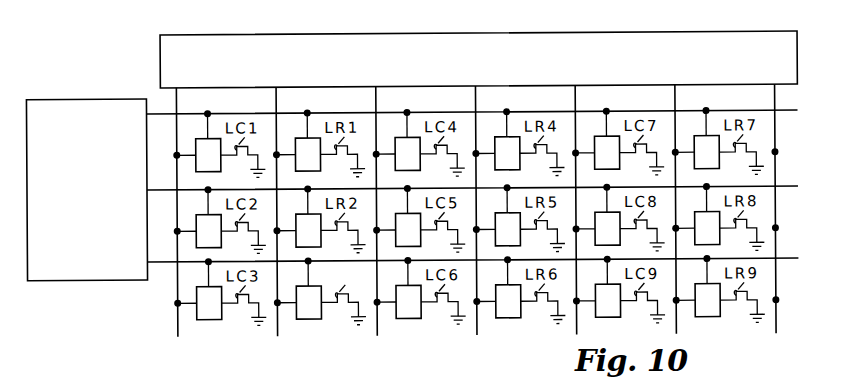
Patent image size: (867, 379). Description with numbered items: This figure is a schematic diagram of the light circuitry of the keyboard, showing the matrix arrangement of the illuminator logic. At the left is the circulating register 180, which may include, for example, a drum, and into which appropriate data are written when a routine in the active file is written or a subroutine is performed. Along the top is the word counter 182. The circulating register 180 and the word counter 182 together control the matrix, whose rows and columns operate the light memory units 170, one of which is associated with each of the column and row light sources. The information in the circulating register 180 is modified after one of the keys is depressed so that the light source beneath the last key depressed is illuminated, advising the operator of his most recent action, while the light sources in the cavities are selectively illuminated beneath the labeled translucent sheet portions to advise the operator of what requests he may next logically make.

The light memory unit 170 is at (315, 318).
The circulating register 180 is at (107, 97).
The word counter 182 is at (740, 31).